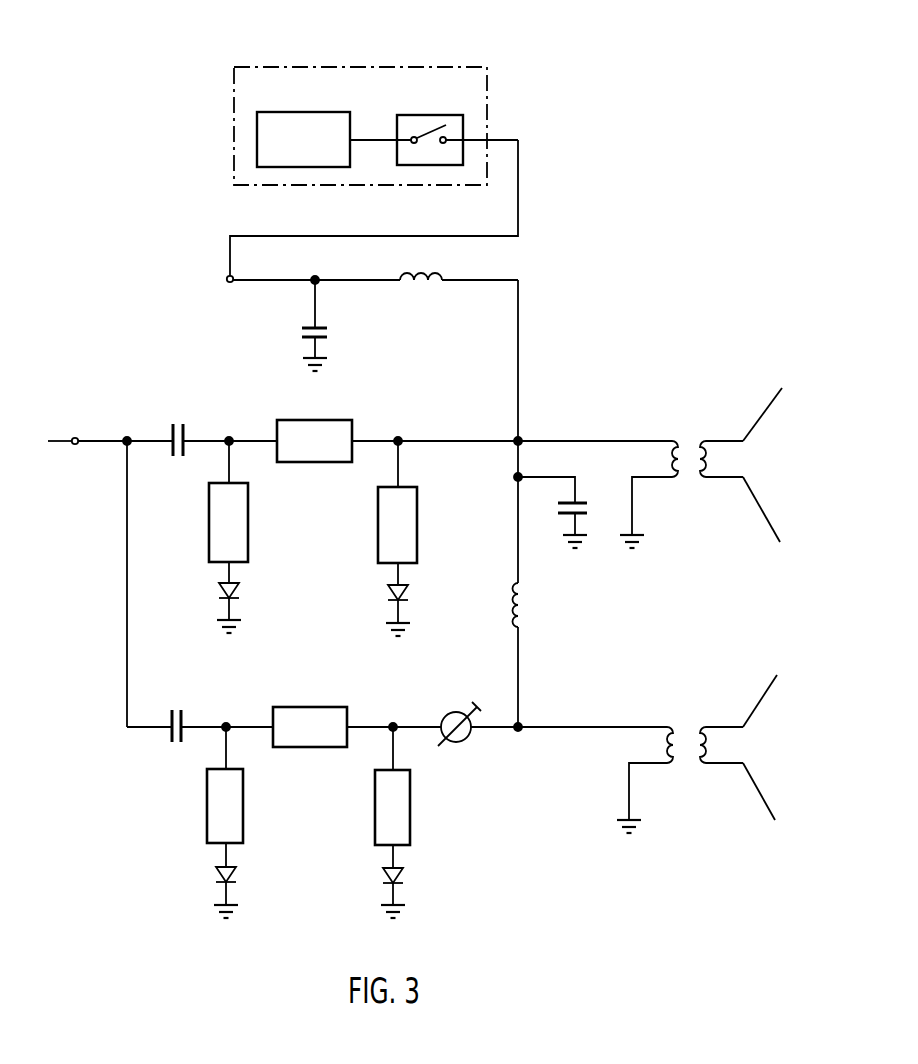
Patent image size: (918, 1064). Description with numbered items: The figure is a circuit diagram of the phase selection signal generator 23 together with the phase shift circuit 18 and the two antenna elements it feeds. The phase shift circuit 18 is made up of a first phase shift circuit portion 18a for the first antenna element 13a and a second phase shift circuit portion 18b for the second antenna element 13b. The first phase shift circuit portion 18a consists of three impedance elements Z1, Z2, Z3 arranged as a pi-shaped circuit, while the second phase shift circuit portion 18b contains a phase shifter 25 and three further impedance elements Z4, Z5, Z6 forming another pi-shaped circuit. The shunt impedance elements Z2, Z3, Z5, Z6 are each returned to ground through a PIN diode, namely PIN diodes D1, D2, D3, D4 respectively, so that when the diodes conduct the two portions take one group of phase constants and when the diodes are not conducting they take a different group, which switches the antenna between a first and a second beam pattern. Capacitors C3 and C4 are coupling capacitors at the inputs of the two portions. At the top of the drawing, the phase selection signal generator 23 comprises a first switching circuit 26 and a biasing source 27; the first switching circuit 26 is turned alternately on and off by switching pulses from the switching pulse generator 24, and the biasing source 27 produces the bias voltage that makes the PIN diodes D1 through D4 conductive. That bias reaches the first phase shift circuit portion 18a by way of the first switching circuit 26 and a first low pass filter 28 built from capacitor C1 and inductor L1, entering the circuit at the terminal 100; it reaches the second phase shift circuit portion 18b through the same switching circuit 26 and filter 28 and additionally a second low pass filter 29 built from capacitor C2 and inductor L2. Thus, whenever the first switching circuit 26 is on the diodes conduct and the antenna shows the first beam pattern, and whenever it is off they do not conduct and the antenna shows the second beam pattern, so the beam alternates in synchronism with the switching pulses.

The phase selection signal generator 23 is at (487, 96).
The switching pulse generator 24 is at (430, 104).
The first switching circuit 26 is at (440, 113).
The biasing source 27 is at (293, 111).
The phase shift circuit 18 is at (571, 307).
The bias input terminal 100 is at (236, 283).
The first low pass filter 28 is at (372, 323).
The inductor L1 is at (421, 297).
The capacitor C1 is at (329, 325).
The capacitor C2 is at (564, 510).
The coupling capacitor C3 is at (183, 426).
The coupling capacitor C4 is at (180, 713).
The impedance element Z1 is at (314, 441).
The impedance element Z2 is at (228, 501).
The impedance element Z3 is at (397, 502).
The impedance element Z4 is at (310, 727).
The impedance element Z5 is at (225, 785).
The impedance element Z6 is at (392, 786).
The PIN diode D1 is at (242, 597).
The PIN diode D2 is at (409, 599).
The PIN diode D3 is at (238, 880).
The PIN diode D4 is at (404, 881).
The inductor L2 is at (531, 605).
The first phase shift circuit portion 18a is at (345, 516).
The second phase shift circuit portion 18b is at (305, 801).
The second low pass filter 29 is at (581, 655).
The phase shifter 25 is at (457, 742).
The first antenna element 13a is at (768, 523).
The second antenna element 13b is at (762, 803).